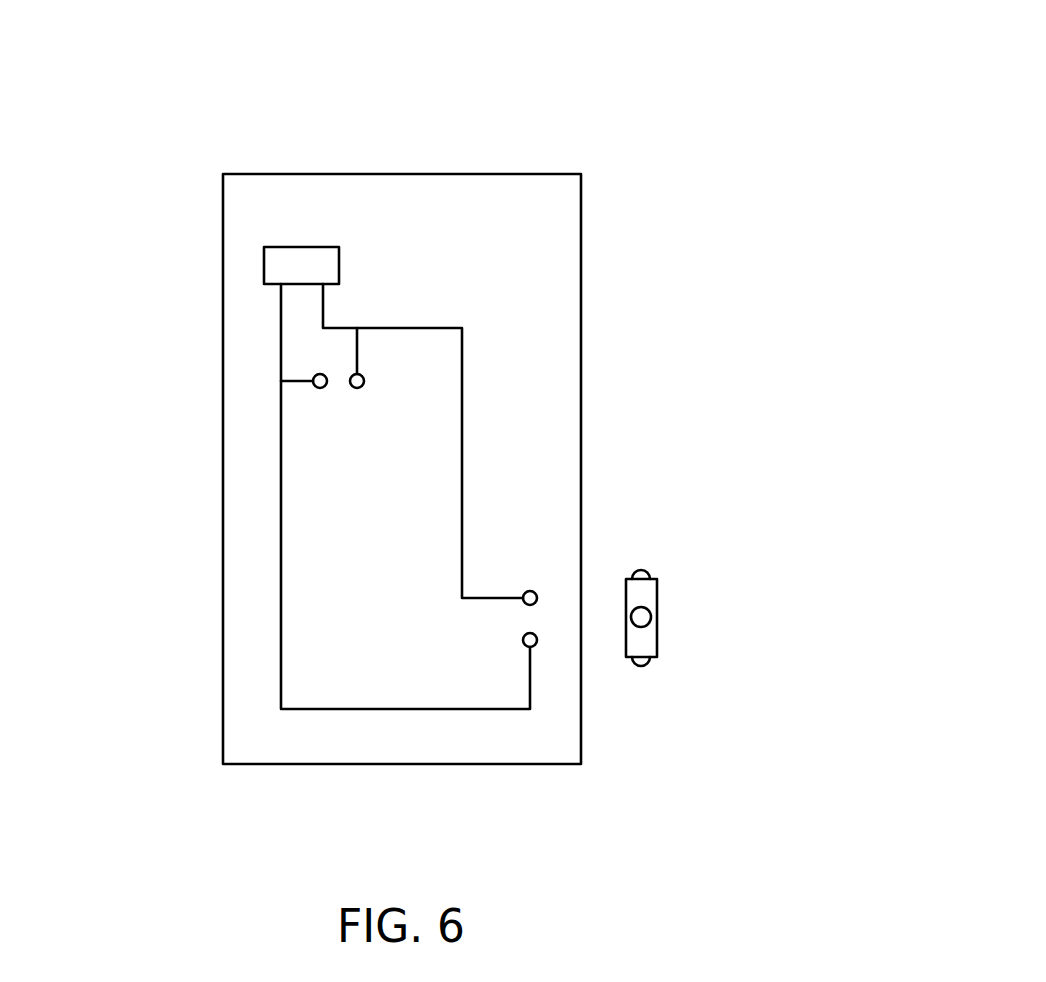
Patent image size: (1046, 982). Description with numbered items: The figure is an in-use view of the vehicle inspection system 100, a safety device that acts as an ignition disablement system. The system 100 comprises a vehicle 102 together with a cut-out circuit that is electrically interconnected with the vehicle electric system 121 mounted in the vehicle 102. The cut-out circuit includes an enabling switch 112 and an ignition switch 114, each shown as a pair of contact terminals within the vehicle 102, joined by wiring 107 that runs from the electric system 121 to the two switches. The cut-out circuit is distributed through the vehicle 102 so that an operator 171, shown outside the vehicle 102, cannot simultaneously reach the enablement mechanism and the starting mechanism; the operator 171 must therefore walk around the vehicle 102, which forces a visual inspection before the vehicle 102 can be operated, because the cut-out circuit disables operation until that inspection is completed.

The vehicle inspection system 100 is at (153, 57).
The vehicle 102 is at (581, 205).
The circuit wiring 107 is at (510, 622).
The enabling switch 112 is at (530, 591).
The ignition switch 114 is at (364, 381).
The vehicle electric system 121 is at (308, 246).
The operator 171 is at (655, 597).